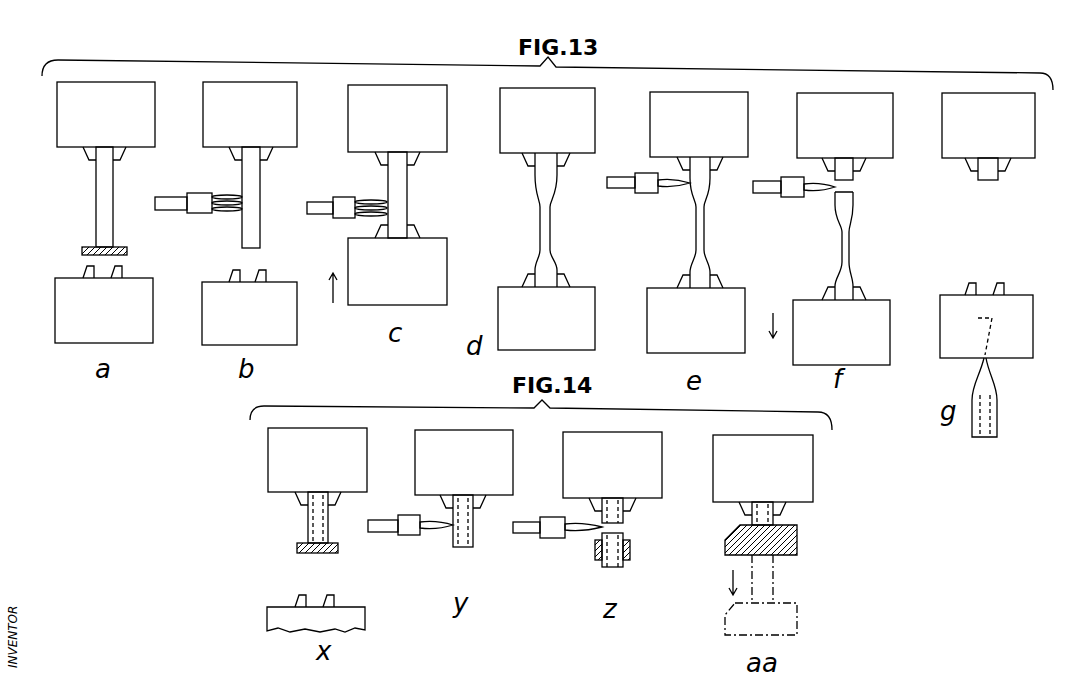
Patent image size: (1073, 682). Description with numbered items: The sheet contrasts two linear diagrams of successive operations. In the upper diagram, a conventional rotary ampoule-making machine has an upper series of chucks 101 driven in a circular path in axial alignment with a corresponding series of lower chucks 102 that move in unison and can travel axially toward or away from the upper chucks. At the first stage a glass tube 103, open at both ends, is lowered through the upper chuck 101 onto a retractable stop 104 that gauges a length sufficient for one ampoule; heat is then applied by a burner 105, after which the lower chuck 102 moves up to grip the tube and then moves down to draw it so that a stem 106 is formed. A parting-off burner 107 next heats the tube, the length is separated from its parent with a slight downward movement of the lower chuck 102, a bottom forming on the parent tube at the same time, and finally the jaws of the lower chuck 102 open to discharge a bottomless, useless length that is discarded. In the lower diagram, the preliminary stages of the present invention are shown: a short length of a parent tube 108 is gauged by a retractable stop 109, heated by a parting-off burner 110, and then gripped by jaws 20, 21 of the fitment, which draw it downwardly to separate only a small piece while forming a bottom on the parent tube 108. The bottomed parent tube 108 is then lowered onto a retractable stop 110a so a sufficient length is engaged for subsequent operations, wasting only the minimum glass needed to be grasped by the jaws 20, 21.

In FIG. 13, the upper chuck 101 is at (220, 110).
In FIG. 14, the upper chuck 101 is at (433, 456).
In FIG. 13, the lower chuck 102 is at (222, 296).
In FIG. 14, the lower chuck 102 is at (300, 620).
In FIG. 13, the glass tube 103 is at (106, 197).
In FIG. 13, the retractable stop 104 is at (90, 250).
In FIG. 13, the burner 105 is at (205, 207).
In FIG. 13, the stem 106 is at (548, 218).
In FIG. 13, the parting-off burner 107 is at (643, 190).
In FIG. 14, the parent tube 108 is at (318, 527).
In FIG. 14, the retractable stop 109 is at (326, 551).
In FIG. 14, the parting-off burner 110 is at (407, 533).
In FIG. 14, the retractable stop 110a is at (792, 548).
In FIG. 14, the jaw 20 is at (596, 556).
In FIG. 14, the jaw 21 is at (630, 556).